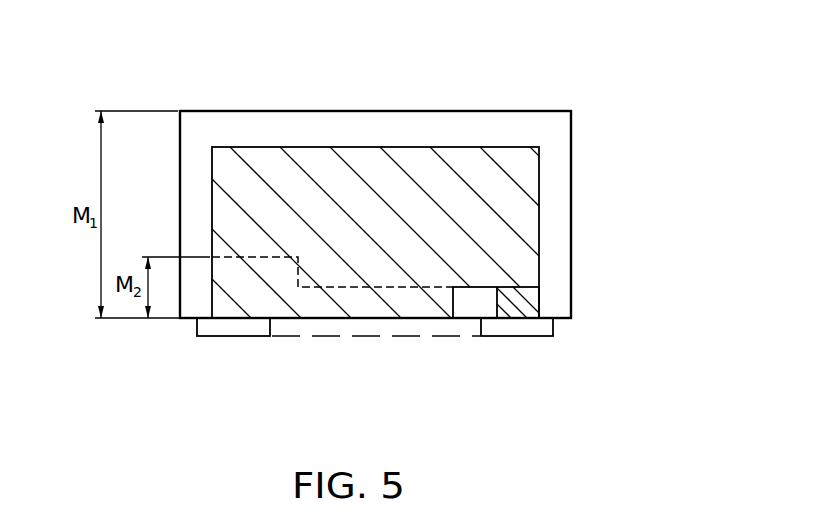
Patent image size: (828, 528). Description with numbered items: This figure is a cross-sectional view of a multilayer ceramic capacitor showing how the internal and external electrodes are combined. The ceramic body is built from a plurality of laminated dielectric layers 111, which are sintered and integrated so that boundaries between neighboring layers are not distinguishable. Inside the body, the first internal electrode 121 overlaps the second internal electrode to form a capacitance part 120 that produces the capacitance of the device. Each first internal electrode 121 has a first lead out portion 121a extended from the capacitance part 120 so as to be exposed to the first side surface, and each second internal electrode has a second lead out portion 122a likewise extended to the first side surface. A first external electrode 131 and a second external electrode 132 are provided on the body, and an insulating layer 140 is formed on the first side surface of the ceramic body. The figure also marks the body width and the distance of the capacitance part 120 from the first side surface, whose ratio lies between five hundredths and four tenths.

The dielectric layer 111 is at (377, 127).
The capacitance part 120 is at (540, 222).
The first internal electrode 121 is at (247, 172).
The first lead out portion 121a is at (233, 288).
The second lead out portion 122a is at (522, 305).
The first external electrode 131 is at (232, 328).
The second external electrode 132 is at (513, 327).
The insulating layer 140 is at (352, 325).